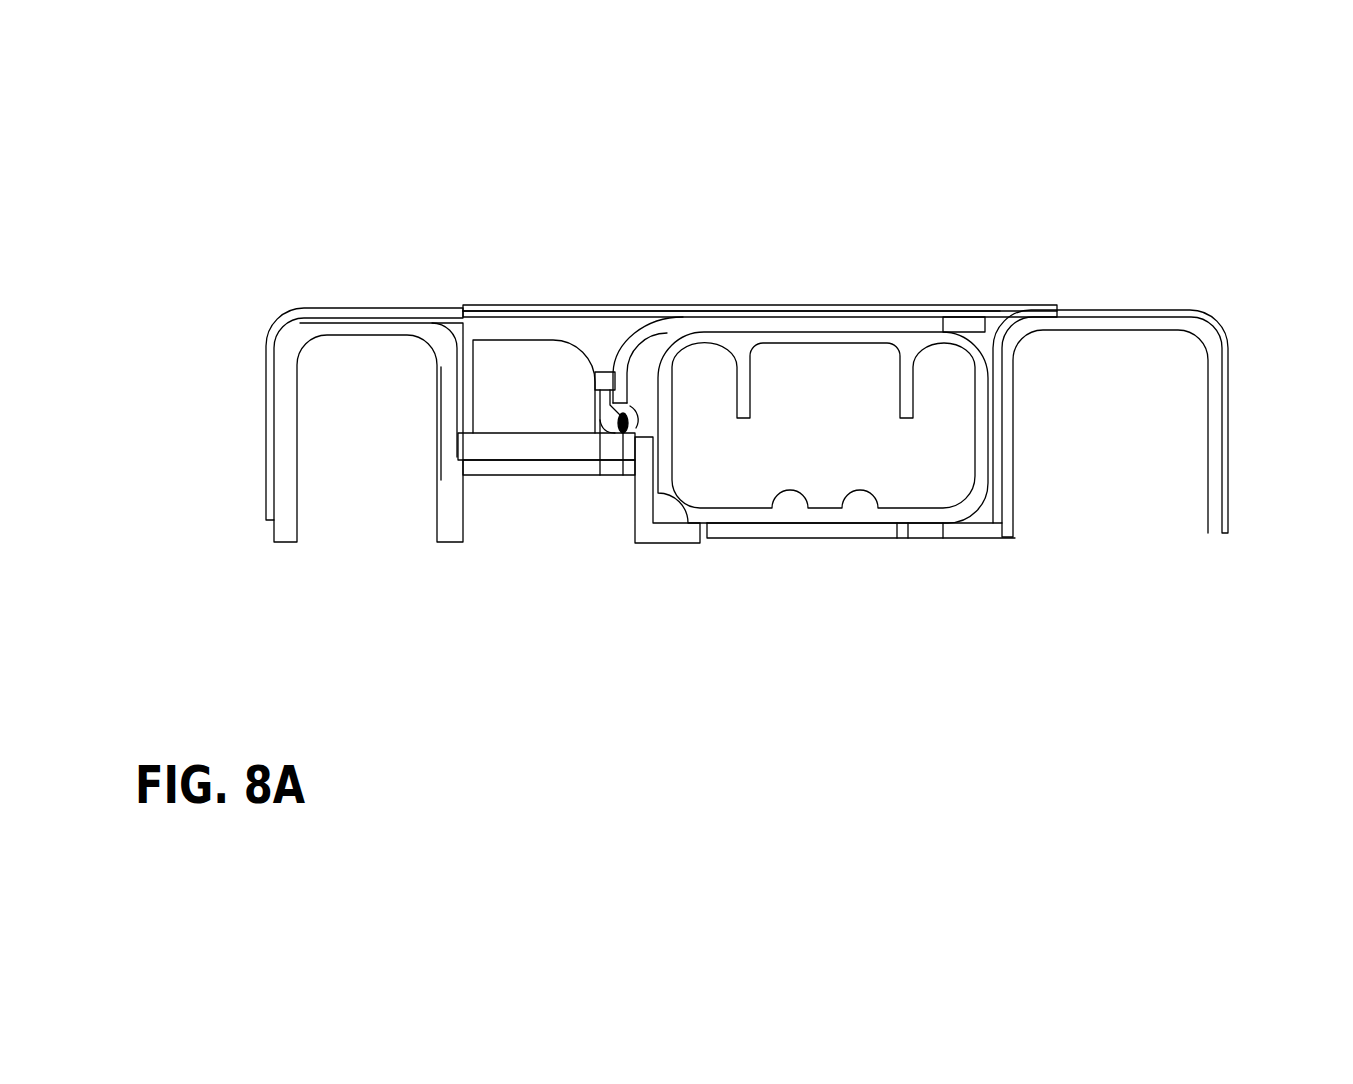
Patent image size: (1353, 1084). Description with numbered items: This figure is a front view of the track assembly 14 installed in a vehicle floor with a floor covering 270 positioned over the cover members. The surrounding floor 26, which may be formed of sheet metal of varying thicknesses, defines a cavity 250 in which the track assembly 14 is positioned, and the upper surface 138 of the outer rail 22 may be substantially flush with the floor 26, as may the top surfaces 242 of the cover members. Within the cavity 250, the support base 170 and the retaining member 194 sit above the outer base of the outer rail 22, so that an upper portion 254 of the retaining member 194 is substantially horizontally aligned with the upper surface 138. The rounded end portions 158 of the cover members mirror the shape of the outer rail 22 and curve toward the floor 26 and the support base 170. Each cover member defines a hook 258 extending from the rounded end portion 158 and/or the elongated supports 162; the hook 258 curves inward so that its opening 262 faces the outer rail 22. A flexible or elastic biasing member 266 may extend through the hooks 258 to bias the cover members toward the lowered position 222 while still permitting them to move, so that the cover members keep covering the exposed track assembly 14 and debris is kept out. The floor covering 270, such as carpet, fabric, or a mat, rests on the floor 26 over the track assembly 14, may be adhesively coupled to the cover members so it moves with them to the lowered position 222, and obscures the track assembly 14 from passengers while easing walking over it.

The track assembly 14 is at (743, 546).
The outer rail 22 is at (794, 520).
The floor 26 is at (293, 342).
The upper surface 138 is at (941, 332).
The rounded end portions 158 is at (645, 340).
The elongated supports 162 is at (600, 382).
The support base 170 is at (527, 443).
The retaining member 194 is at (515, 408).
The lowered position 222 is at (870, 300).
The top surfaces 242 is at (805, 314).
The cavity 250 is at (598, 356).
The upper portion 254 is at (490, 390).
The hook 258 is at (624, 436).
The opening 262 is at (633, 401).
The biasing member 266 is at (637, 425).
The floor covering 270 is at (522, 305).